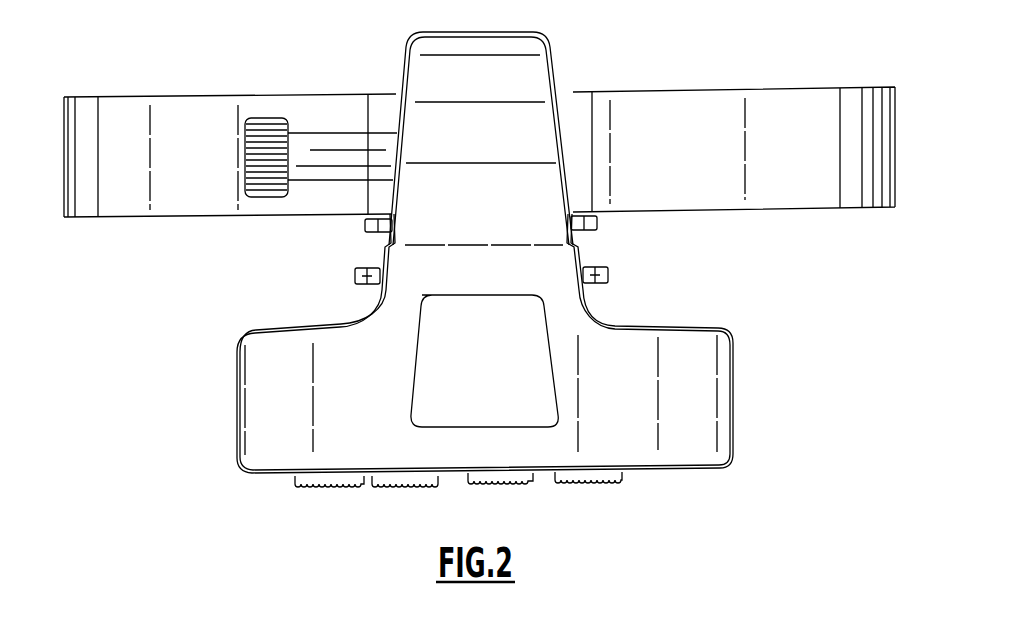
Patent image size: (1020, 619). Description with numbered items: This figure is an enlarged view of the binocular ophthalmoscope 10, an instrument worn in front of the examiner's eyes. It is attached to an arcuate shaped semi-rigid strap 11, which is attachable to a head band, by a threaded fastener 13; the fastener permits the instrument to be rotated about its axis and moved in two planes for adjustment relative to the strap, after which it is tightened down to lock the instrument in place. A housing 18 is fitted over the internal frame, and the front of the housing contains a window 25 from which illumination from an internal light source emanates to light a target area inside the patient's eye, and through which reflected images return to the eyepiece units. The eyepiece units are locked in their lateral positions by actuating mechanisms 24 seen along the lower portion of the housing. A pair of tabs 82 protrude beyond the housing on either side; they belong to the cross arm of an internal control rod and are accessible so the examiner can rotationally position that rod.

The binocular ophthalmoscope 10 is at (703, 314).
The arcuate shaped semi-rigid strap 11 is at (730, 88).
The threaded fastener 13 is at (270, 118).
The housing 18 is at (566, 53).
The actuating mechanisms 24 is at (325, 488).
The window 25 is at (501, 381).
The tabs 82 is at (355, 277).